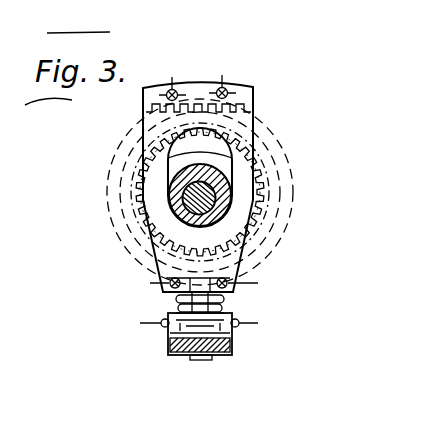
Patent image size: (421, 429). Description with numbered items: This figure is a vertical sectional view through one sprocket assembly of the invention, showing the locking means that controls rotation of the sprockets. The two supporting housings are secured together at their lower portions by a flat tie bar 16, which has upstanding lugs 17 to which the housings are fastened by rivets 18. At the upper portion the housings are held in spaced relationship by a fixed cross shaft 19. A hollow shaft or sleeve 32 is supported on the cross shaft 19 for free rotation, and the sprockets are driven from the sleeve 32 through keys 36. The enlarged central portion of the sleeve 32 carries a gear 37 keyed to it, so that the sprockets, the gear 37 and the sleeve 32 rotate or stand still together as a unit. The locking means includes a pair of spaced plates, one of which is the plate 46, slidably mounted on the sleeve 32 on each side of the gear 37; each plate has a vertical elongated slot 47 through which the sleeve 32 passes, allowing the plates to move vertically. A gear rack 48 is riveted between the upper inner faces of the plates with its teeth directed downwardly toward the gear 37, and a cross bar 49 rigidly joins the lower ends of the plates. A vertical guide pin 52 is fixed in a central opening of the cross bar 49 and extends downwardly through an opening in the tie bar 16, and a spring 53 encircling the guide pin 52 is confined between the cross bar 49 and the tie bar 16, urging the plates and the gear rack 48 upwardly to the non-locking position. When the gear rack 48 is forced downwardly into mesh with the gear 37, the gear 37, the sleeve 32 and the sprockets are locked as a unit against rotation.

The flat tie bar 16 is at (168, 350).
The upstanding lugs 17 is at (233, 340).
The rivets 18 is at (163, 326).
The cross shaft 19 is at (168, 188).
The hollow shaft or sleeve 32 is at (236, 220).
The keys 36 is at (272, 212).
The gear 37 is at (170, 146).
The plate 46 is at (256, 145).
The vertical elongated slots 47 is at (262, 175).
The gear rack 48 is at (228, 92).
The cross bar 49 is at (240, 283).
The vertical guide pin 52 is at (195, 360).
The spring 53 is at (225, 308).